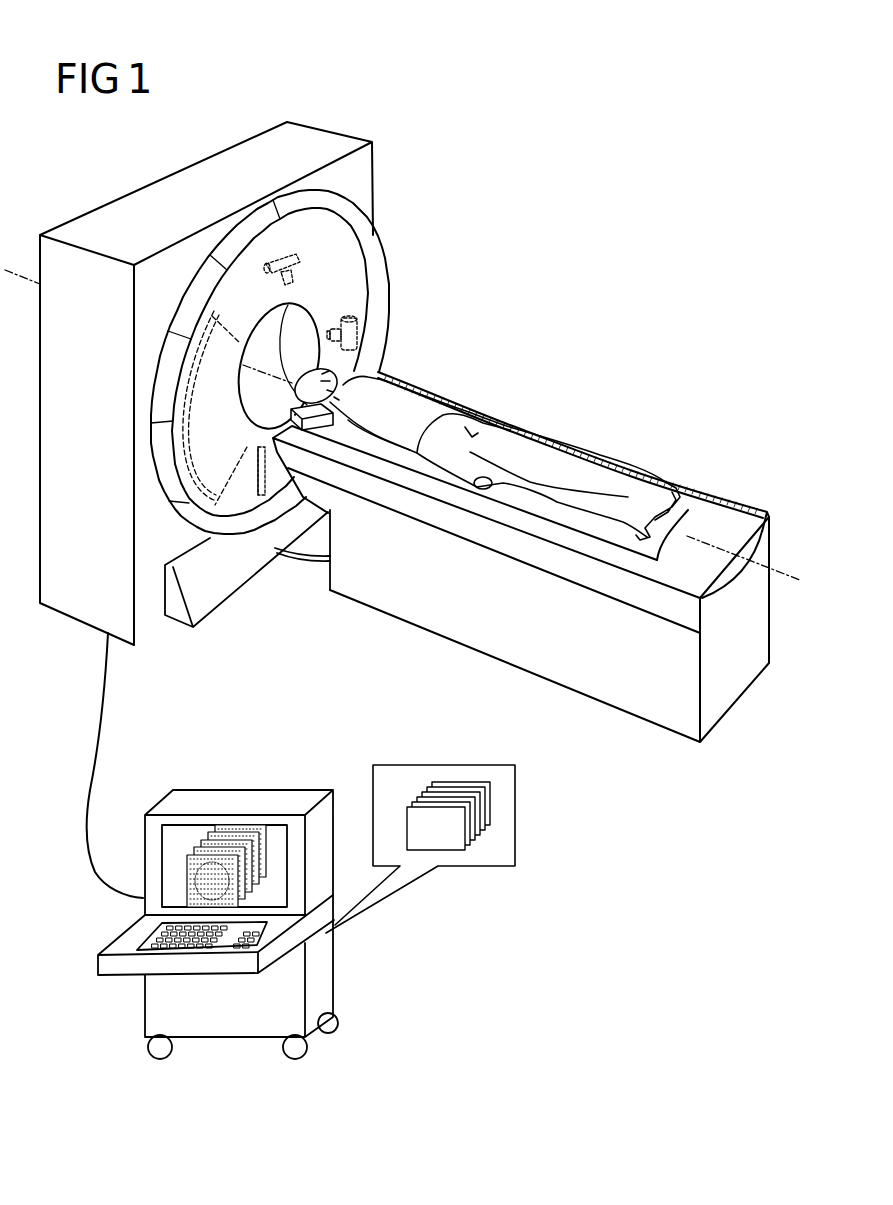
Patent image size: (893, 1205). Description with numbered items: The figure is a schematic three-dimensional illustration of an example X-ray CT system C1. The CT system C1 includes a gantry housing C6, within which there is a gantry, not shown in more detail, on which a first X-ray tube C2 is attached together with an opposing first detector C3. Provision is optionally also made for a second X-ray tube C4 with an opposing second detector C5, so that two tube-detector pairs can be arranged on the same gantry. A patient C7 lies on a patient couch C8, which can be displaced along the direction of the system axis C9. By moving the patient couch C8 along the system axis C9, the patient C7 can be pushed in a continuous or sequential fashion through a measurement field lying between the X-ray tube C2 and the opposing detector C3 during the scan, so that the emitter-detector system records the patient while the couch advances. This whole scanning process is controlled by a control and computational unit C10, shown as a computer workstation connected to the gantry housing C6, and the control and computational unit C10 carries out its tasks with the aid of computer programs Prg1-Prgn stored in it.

The CT system C1 is at (523, 323).
The first X-ray tube C2 is at (302, 262).
The first detector C3 is at (268, 480).
The second X-ray tube C4 is at (357, 330).
The second detector C5 is at (222, 483).
The gantry housing C6 is at (88, 602).
The patient C7 is at (412, 412).
The patient couch C8 is at (660, 690).
The system axis C9 is at (792, 573).
The control and computational unit C10 is at (323, 977).
The computer programs Prg1-Prgn is at (450, 850).